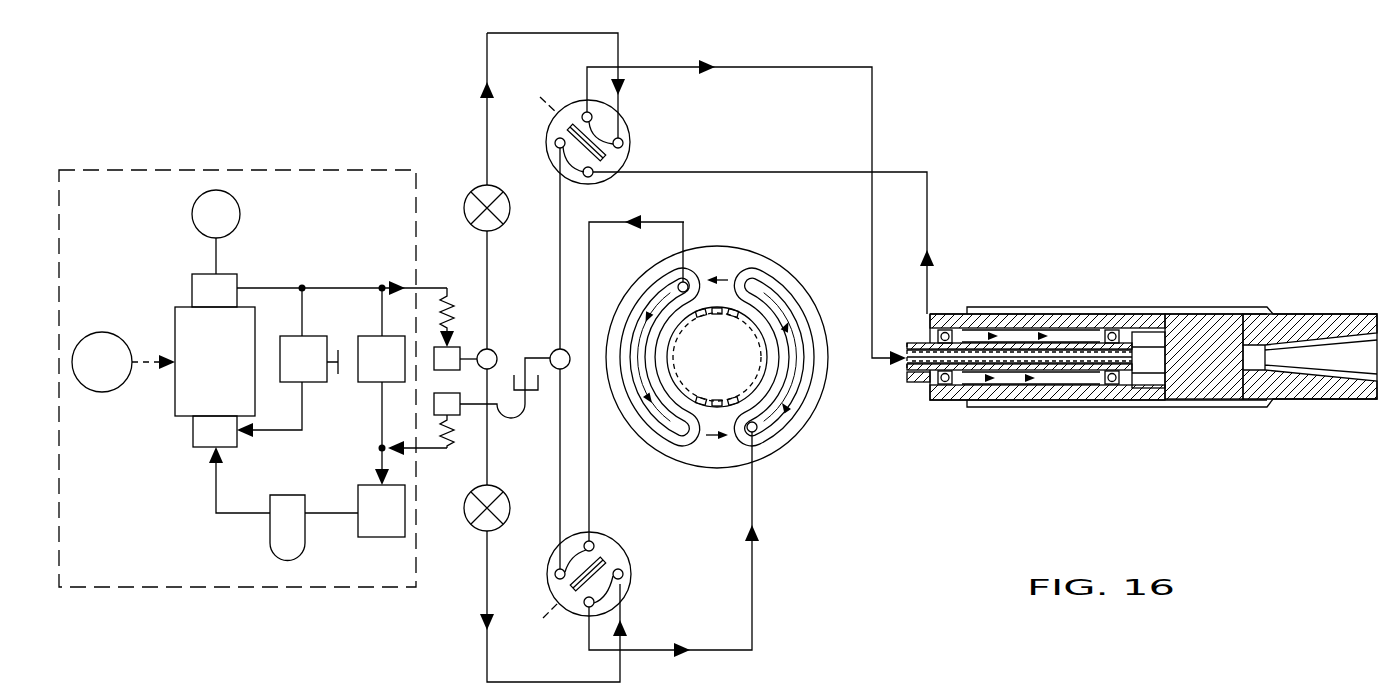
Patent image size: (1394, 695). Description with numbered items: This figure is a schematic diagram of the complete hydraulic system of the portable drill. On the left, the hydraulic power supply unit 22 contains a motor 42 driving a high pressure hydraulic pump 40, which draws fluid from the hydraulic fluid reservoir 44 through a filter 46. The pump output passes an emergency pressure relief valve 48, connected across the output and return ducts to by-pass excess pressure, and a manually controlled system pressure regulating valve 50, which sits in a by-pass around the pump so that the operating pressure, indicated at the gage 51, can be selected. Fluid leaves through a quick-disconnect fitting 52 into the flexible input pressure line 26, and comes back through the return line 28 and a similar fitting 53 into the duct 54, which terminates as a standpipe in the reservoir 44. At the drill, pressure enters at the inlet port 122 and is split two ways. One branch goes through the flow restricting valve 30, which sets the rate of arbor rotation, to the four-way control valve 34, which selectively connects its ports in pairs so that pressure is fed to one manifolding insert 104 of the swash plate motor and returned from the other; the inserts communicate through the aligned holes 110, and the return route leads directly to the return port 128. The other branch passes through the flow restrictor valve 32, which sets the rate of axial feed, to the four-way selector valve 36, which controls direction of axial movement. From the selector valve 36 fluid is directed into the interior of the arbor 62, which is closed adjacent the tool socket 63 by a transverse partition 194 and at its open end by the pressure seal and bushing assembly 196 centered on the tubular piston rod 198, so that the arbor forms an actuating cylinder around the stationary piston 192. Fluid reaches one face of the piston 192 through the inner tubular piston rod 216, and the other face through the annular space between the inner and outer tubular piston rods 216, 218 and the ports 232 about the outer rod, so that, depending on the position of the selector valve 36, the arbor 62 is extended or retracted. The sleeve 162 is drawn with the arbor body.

The hydraulic power supply unit 22 is at (185, 165).
The gage 51 is at (239, 212).
The motor 42 is at (110, 336).
The high pressure hydraulic pump 40 is at (175, 406).
The emergency pressure relief valve 48 is at (371, 335).
The system pressure regulating valve 50 is at (317, 384).
The duct 54 is at (379, 431).
The hydraulic fluid reservoir 44 is at (368, 538).
The filter 46 is at (271, 543).
The quick-disconnect fitting 52 is at (459, 314).
The fitting 53 is at (462, 441).
The input pressure line 26 is at (455, 333).
The return line 28 is at (462, 412).
The inlet port 122 is at (498, 362).
The return port 128 is at (556, 367).
The flow restrictor valve 32 is at (478, 190).
The flow restricting valve 30 is at (478, 526).
The four-way selector valve 36 is at (556, 128).
The four-way control valve 34 is at (553, 560).
The aligned holes 110 is at (688, 283).
The manifolding inserts 104 is at (777, 286).
The pressure seal and bushing assembly 196 is at (946, 332).
The tubular piston rod 198 is at (945, 384).
The inner tubular piston rod 216 is at (1056, 344).
The outer tubular piston rod 218 is at (1040, 385).
The arbor 62 is at (1107, 318).
The ports 232 is at (1098, 382).
The piston 192 is at (1130, 388).
The transverse partition 194 is at (1184, 358).
The sleeve 162 is at (1155, 319).
The tool socket 63 is at (1321, 373).